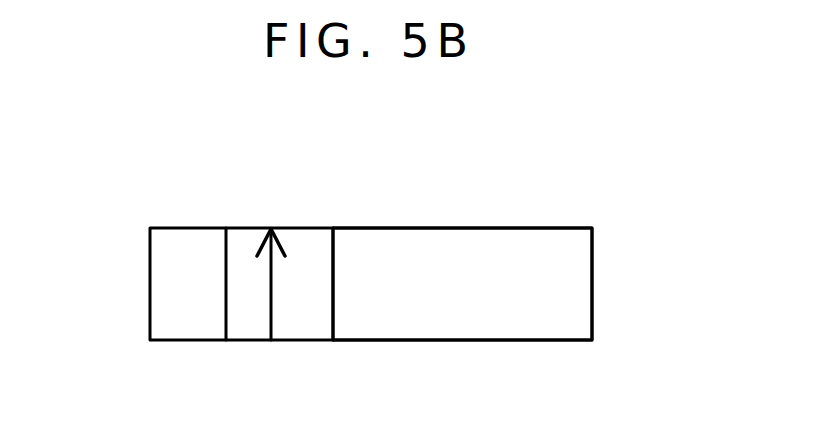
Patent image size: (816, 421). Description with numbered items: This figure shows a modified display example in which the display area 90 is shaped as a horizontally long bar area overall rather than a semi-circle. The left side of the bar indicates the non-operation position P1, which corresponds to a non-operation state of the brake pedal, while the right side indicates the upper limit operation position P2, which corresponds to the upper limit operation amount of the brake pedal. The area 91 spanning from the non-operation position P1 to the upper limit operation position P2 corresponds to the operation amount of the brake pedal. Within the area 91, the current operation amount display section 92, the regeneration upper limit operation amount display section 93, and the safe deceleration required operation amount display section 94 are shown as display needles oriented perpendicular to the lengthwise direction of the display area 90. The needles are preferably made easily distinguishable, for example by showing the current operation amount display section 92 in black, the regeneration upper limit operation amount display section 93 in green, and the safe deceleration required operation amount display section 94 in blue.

The display area 90 is at (437, 228).
The area 91 is at (505, 262).
The current operation amount display section 92 is at (273, 282).
The regeneration upper limit operation amount display section 93 is at (335, 312).
The safe deceleration required operation amount display section 94 is at (225, 268).
The non-operation position P1 is at (150, 291).
The upper limit operation position P2 is at (593, 307).